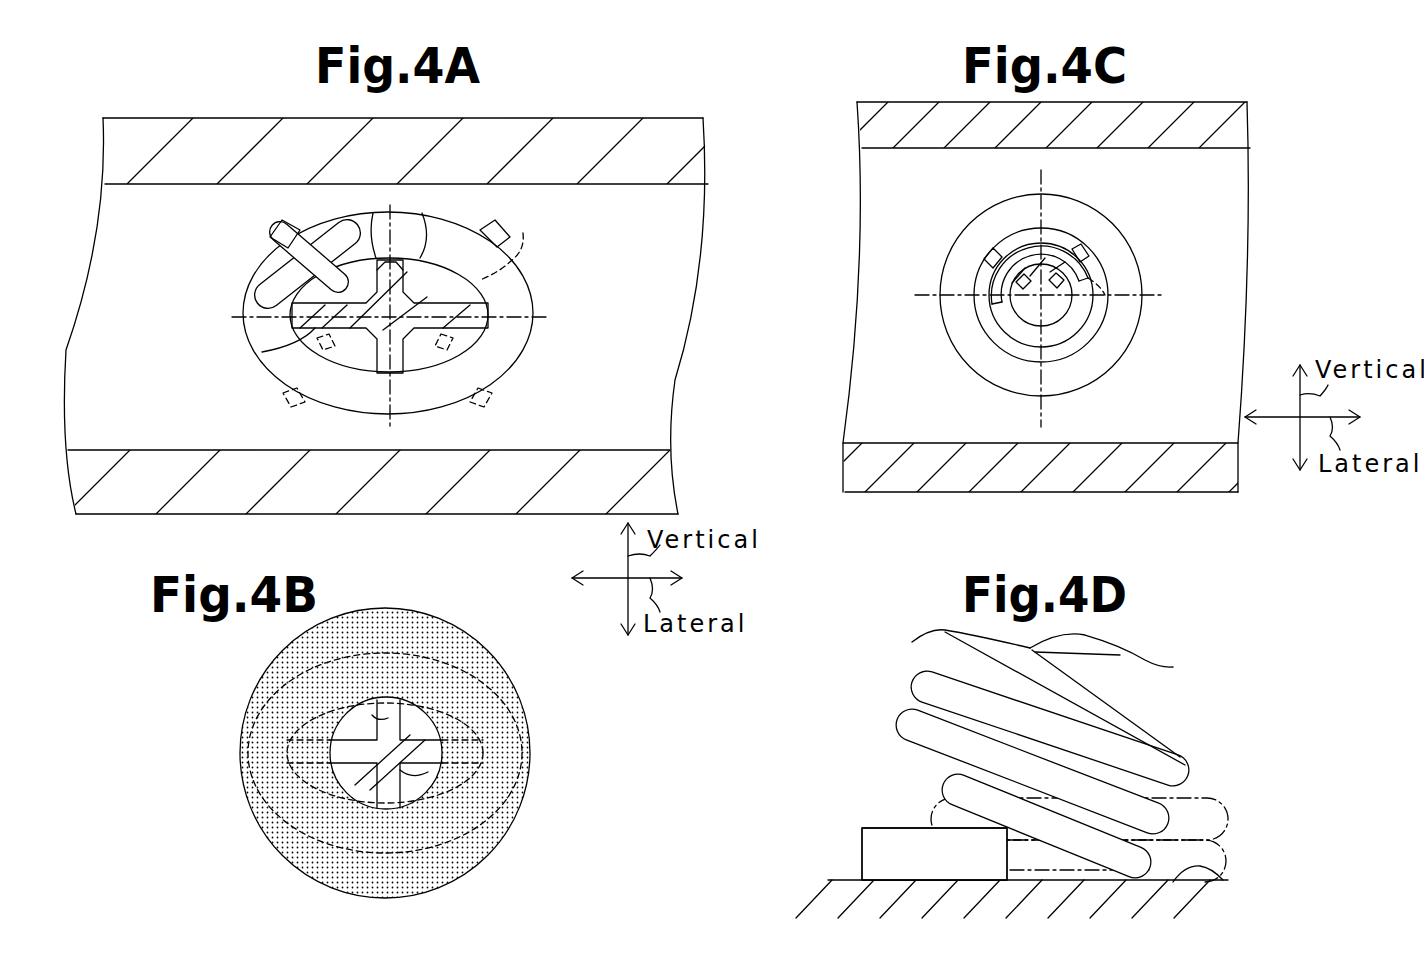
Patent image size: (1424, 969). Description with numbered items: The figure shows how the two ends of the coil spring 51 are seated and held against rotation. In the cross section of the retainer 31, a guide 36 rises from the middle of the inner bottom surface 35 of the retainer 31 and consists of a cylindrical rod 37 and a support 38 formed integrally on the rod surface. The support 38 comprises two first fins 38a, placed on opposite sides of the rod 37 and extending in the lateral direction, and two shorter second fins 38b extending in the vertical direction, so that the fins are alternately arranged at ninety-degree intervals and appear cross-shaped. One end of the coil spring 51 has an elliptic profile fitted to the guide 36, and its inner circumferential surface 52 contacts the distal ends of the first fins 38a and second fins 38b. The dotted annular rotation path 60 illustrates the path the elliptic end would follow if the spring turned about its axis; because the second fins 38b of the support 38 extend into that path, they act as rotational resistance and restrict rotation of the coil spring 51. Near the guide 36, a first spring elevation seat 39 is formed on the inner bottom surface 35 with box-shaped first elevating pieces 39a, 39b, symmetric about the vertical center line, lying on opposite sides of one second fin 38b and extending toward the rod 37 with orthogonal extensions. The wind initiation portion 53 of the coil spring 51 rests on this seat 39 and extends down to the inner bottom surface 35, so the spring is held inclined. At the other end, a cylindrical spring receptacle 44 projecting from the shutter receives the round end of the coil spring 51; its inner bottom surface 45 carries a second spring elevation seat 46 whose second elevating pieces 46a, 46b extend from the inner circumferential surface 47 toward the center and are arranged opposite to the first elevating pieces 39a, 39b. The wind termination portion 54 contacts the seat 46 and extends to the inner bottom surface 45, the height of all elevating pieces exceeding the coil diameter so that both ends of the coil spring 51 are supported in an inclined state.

In FIG. 4A, the retainer 31 is at (703, 140).
In FIG. 4C, the retainer 31 is at (1205, 115).
In FIG. 4A, the inner bottom surface 35 is at (672, 397).
In FIG. 4A, the guide 36 is at (465, 316).
In FIG. 4A, the rod 37 is at (483, 300).
In FIG. 4B, the rod 37 is at (372, 770).
In FIG. 4A, the support 38 is at (493, 308).
In FIG. 4A, the first fins 38a is at (262, 352).
In FIG. 4B, the first fins 38a is at (428, 772).
In FIG. 4A, the second fins 38b is at (385, 268).
In FIG. 4B, the second fins 38b is at (380, 718).
In FIG. 4A, the first spring elevation seat 39 is at (502, 220).
In FIG. 4A, the first elevating piece 39a is at (267, 224).
In FIG. 4A, the first elevating piece 39b is at (490, 225).
In FIG. 4C, the spring receptacle 44 is at (1132, 283).
In FIG. 4C, the inner bottom surface 45 is at (1052, 357).
In FIG. 4D, the inner bottom surface 45 is at (1223, 877).
In FIG. 4C, the second spring elevation seat 46 is at (1143, 246).
In FIG. 4D, the second spring elevation seat 46 is at (870, 852).
In FIG. 4A, the second elevating piece 46a is at (296, 408).
In FIG. 4C, the second elevating piece 46a is at (1085, 253).
In FIG. 4A, the second elevating piece 46b is at (482, 408).
In FIG. 4C, the second elevating piece 46b is at (990, 258).
In FIG. 4C, the inner circumferential surface 47 is at (1097, 310).
In FIG. 4A, the coil spring 51 is at (510, 363).
In FIG. 4B, the coil spring 51 is at (520, 800).
In FIG. 4C, the coil spring 51 is at (1070, 327).
In FIG. 4D, the coil spring 51 is at (1180, 770).
In FIG. 4A, the inner circumferential surface 52 is at (413, 223).
In FIG. 4A, the wind initiation portion 53 is at (510, 242).
In FIG. 4C, the wind termination portion 54 is at (1107, 270).
In FIG. 4D, the wind termination portion 54 is at (958, 790).
In FIG. 4B, the rotation path 60 is at (487, 858).